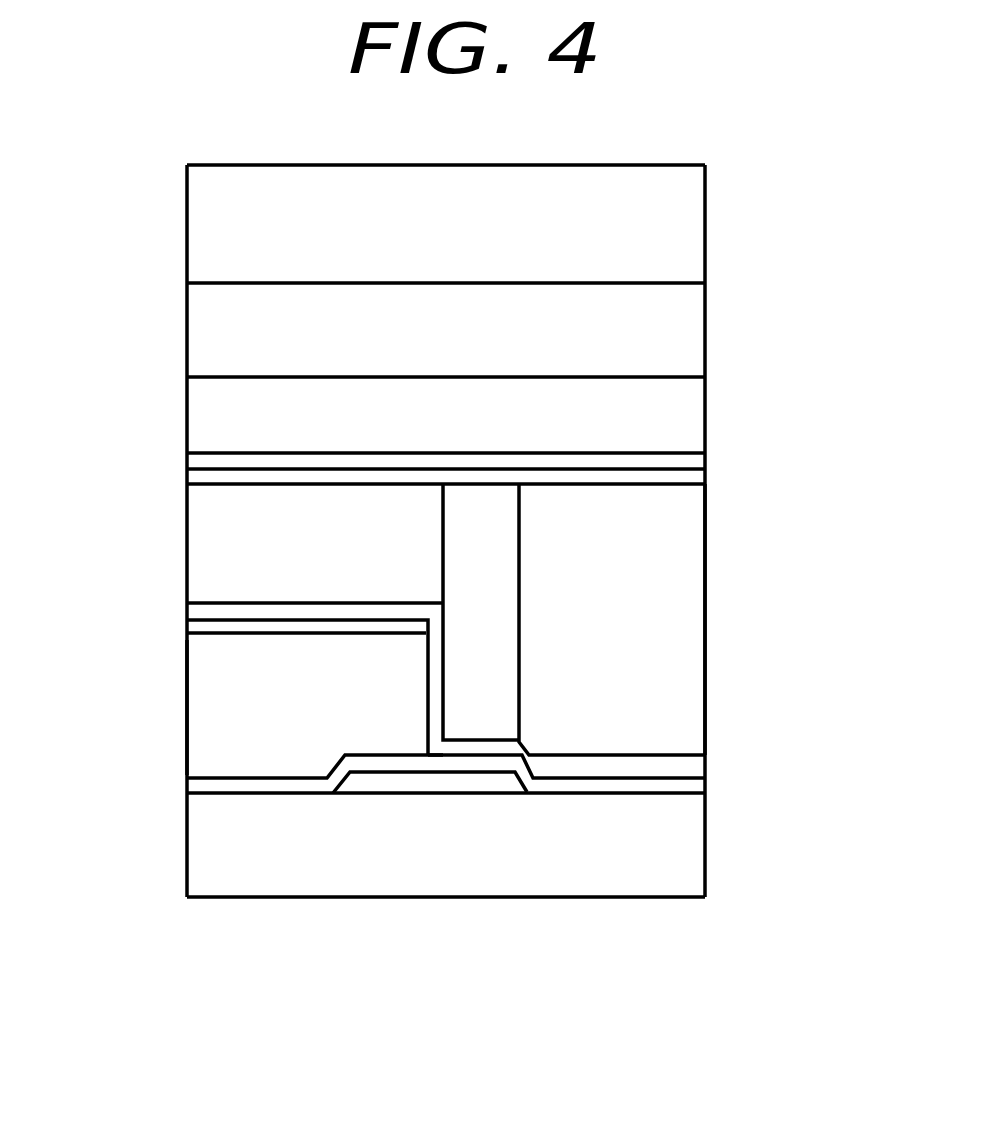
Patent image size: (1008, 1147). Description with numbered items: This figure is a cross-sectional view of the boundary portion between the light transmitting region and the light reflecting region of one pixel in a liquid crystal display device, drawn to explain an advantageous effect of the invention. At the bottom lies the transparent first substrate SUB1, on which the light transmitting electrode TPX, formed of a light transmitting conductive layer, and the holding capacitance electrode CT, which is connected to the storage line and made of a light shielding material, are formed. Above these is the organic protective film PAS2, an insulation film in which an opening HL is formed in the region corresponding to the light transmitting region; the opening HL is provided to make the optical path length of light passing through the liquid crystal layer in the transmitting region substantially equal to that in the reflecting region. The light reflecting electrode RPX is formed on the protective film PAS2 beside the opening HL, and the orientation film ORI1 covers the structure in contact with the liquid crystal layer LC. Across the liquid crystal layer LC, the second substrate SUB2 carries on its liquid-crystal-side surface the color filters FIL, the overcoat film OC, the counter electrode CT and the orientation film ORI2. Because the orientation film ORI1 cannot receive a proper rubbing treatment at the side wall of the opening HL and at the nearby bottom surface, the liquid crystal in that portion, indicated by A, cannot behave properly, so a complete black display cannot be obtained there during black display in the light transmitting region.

The second substrate SUB2 is at (688, 220).
The color filters FIL is at (688, 323).
The overcoat film OC is at (688, 415).
The counter electrode CT is at (697, 462).
The orientation film ORI2 is at (697, 478).
The liquid crystal portion with improper behavior A is at (493, 583).
The liquid crystal layer LC is at (698, 682).
The orientation film ORI1 is at (195, 611).
The light reflecting electrode RPX is at (195, 627).
The organic protective film PAS2 is at (215, 740).
The light transmitting electrode TPX is at (697, 788).
The opening HL is at (428, 677).
The first substrate SUB1 is at (697, 868).